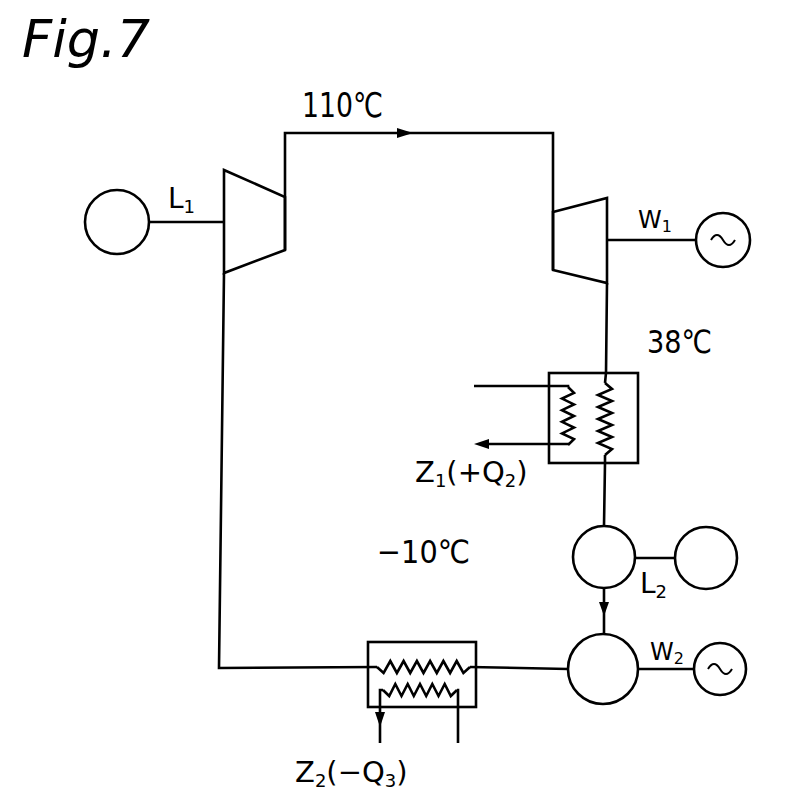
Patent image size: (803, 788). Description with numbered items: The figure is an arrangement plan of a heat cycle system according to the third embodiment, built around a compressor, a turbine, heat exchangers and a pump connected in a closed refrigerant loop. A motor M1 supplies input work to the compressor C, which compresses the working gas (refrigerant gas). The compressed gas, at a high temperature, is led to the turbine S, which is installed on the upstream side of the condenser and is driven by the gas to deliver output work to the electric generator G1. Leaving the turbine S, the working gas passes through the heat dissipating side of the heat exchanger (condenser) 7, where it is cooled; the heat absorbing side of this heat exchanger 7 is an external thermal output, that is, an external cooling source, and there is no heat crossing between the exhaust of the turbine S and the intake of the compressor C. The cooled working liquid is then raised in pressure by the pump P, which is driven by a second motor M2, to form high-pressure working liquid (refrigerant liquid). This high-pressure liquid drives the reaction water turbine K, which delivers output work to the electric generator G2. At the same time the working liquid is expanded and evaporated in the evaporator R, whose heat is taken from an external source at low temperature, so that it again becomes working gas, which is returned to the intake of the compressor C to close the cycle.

The heat exchanger (condenser) 7 is at (638, 408).
The evaporator R is at (430, 642).
The compressor C is at (254, 221).
The turbine S is at (580, 240).
The pump P is at (604, 557).
The water turbine K is at (603, 669).
The motor M1 is at (154, 222).
The motor M2 is at (686, 558).
The electric generator G1 is at (681, 223).
The electric generator G2 is at (707, 658).